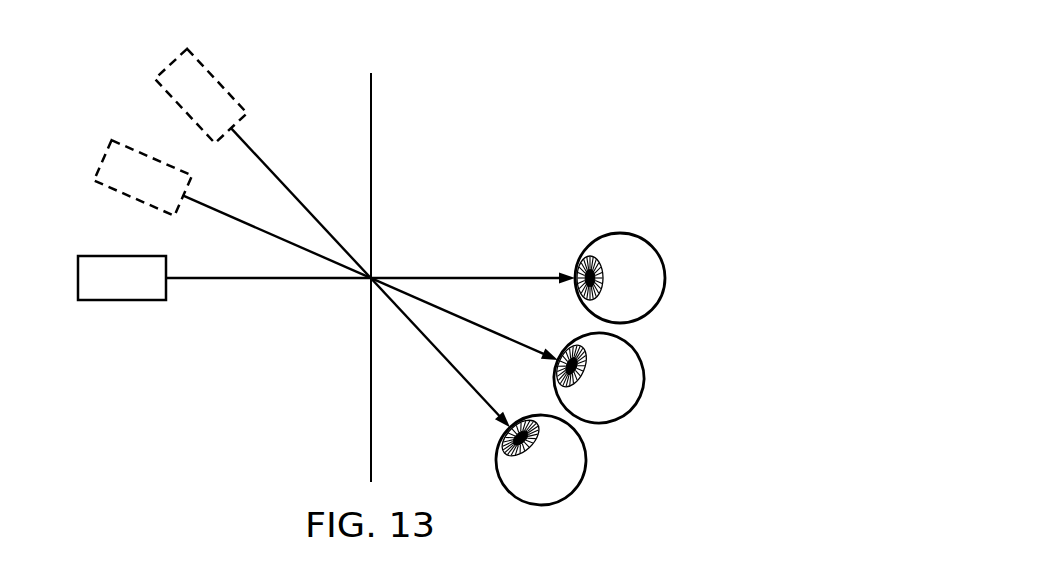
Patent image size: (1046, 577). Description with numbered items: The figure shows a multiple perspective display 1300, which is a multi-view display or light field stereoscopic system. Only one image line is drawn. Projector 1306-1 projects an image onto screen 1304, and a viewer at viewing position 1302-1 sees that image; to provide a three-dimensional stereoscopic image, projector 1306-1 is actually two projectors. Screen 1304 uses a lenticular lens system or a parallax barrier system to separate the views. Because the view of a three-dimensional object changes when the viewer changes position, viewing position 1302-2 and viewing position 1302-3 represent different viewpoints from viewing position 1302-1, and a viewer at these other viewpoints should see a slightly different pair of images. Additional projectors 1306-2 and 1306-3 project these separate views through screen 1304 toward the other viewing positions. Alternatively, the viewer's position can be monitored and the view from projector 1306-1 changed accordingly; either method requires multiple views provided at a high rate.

The multiple perspective display 1300 is at (567, 74).
The viewing position 1302-1 is at (617, 233).
The viewing position 1302-2 is at (644, 377).
The viewing position 1302-3 is at (585, 458).
The screen 1304 is at (371, 177).
The projector 1306-1 is at (123, 302).
The additional projector 1306-2 is at (137, 198).
The additional projector 1306-3 is at (170, 67).